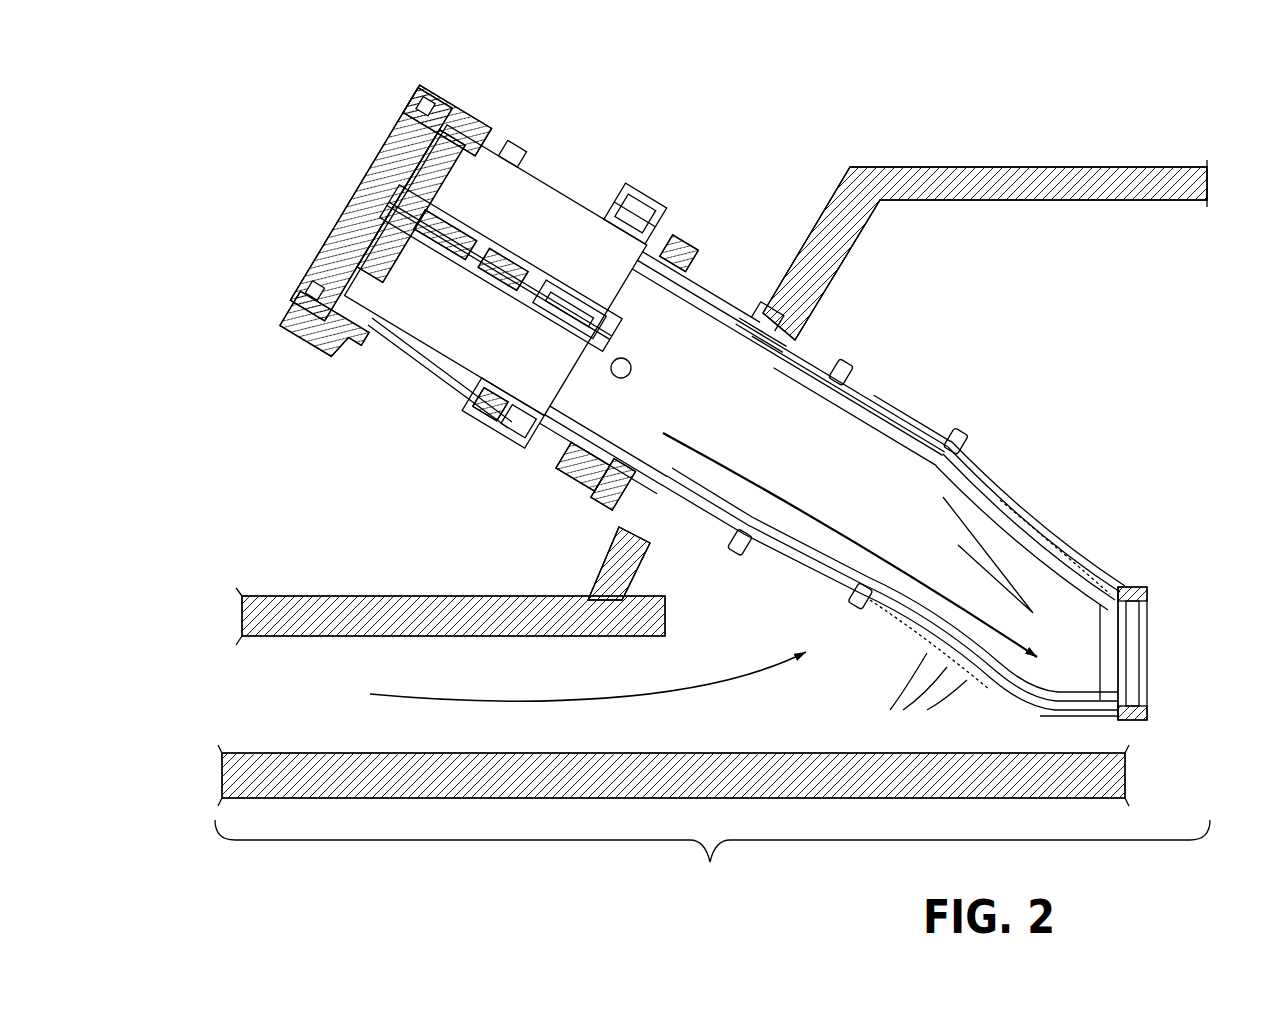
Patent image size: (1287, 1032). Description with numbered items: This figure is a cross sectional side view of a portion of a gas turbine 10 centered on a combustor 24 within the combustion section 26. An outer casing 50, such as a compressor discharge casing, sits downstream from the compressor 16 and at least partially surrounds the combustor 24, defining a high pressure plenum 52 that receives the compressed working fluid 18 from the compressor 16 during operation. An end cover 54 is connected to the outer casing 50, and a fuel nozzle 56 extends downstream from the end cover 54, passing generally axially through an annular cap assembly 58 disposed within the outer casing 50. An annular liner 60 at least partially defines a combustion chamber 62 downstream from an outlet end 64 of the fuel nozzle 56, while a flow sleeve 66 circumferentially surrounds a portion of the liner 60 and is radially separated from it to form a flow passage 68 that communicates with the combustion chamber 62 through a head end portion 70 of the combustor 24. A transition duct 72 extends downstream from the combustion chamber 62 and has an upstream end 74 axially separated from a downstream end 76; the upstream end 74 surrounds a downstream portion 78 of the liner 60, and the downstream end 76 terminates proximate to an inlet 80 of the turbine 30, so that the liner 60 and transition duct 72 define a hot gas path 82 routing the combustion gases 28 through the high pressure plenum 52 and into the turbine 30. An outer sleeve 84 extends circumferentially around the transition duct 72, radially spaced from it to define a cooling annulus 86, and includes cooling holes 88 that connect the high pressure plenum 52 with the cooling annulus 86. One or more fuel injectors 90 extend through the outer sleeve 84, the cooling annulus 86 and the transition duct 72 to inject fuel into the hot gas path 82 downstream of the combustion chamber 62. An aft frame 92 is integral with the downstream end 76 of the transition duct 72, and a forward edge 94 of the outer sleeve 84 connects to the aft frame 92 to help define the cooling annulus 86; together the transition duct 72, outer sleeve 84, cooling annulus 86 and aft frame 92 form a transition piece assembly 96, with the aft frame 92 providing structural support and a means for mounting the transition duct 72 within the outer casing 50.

The gas turbine 10 is at (910, 64).
The compressor 16 is at (378, 578).
The compressed working fluid 18 is at (600, 705).
The combustor 24 is at (672, 182).
The combustion section 26 is at (712, 827).
The combustion gases 28 is at (712, 445).
The turbine 30 is at (1227, 672).
The outer casing 50 is at (1012, 167).
The high pressure plenum 52 is at (1069, 329).
The end cover 54 is at (455, 84).
The fuel nozzle 56 is at (490, 246).
The annular cap assembly 58 is at (575, 186).
The annular liner 60 is at (745, 338).
The combustion chamber 62 is at (629, 346).
The outlet end 64 is at (603, 365).
The flow sleeve 66 is at (800, 340).
The flow passage 68 is at (797, 352).
The head end portion 70 is at (493, 160).
The transition duct 72 is at (1022, 490).
The upstream end 74 is at (978, 512).
The downstream end 76 is at (1110, 673).
The downstream portion 78 is at (906, 516).
The inlet 80 is at (1160, 662).
The hot gas path 82 is at (768, 472).
The outer sleeve 84 is at (1010, 512).
The cooling annulus 86 is at (1060, 543).
The cooling holes 88 is at (925, 710).
The fuel injectors 90 is at (848, 378).
The aft frame 92 is at (1142, 584).
The forward edge 94 is at (1102, 730).
The transition piece assembly 96 is at (1123, 440).